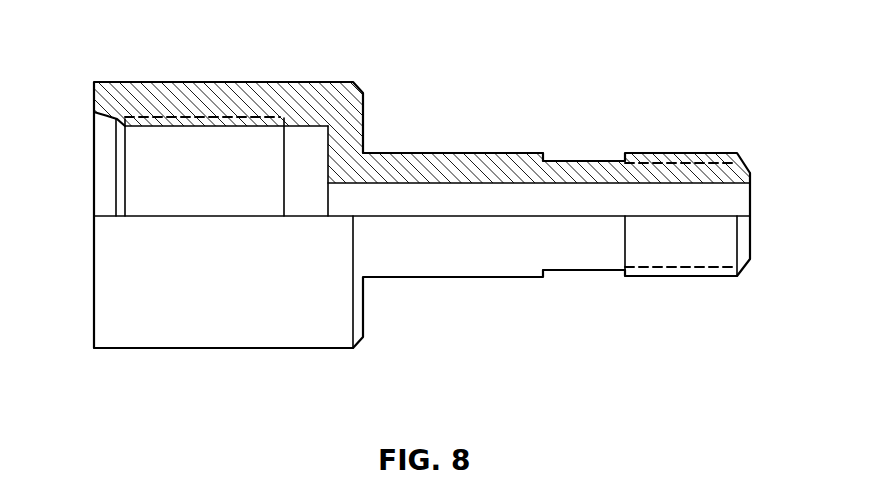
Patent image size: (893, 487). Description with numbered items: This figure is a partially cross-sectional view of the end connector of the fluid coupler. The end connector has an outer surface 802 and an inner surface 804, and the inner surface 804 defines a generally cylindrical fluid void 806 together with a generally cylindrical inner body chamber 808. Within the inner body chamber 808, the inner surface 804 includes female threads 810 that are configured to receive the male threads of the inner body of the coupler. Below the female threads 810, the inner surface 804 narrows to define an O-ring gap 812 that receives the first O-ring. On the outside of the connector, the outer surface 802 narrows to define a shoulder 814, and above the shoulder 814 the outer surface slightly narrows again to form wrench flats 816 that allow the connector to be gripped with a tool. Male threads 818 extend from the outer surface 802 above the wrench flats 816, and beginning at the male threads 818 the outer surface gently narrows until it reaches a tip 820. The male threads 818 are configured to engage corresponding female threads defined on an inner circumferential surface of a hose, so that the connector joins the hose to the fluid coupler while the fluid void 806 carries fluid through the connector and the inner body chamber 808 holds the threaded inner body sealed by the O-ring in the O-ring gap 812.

The outer surface 802 is at (220, 82).
The inner surface 804 is at (253, 132).
The fluid void 806 is at (692, 192).
The inner body chamber 808 is at (202, 193).
The female threads 810 is at (205, 122).
The O-ring gap 812 is at (110, 152).
The shoulder 814 is at (350, 298).
The wrench flats 816 is at (585, 273).
The male threads 818 is at (683, 268).
The tip 820 is at (752, 195).